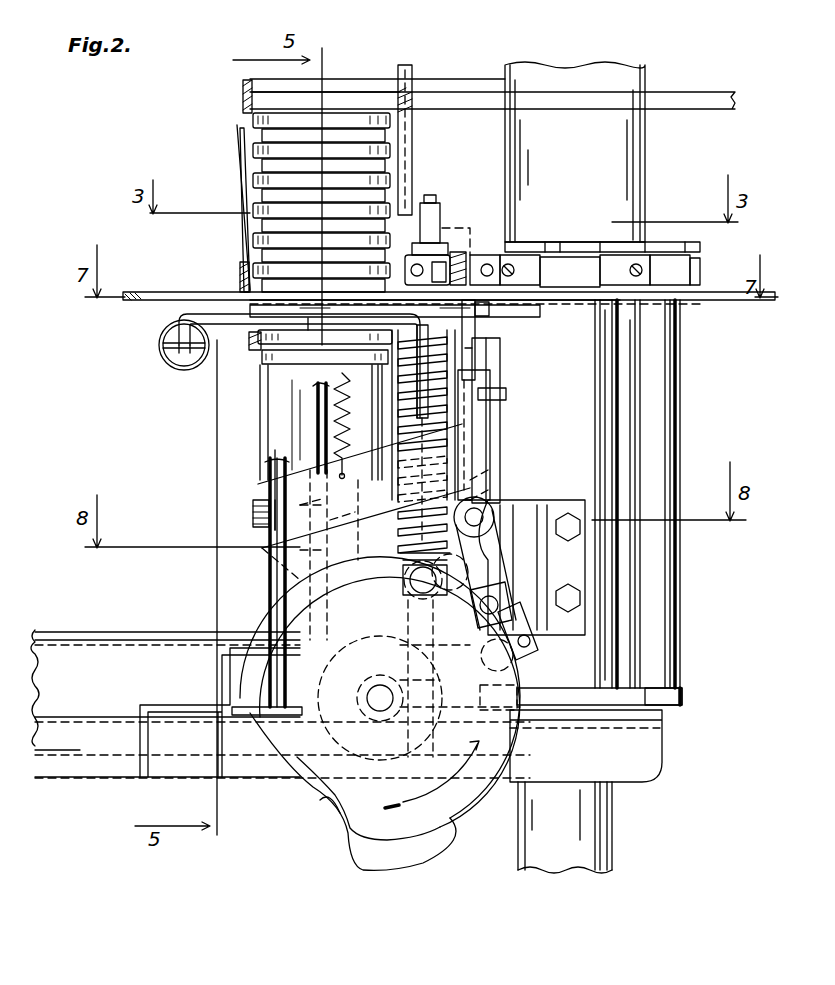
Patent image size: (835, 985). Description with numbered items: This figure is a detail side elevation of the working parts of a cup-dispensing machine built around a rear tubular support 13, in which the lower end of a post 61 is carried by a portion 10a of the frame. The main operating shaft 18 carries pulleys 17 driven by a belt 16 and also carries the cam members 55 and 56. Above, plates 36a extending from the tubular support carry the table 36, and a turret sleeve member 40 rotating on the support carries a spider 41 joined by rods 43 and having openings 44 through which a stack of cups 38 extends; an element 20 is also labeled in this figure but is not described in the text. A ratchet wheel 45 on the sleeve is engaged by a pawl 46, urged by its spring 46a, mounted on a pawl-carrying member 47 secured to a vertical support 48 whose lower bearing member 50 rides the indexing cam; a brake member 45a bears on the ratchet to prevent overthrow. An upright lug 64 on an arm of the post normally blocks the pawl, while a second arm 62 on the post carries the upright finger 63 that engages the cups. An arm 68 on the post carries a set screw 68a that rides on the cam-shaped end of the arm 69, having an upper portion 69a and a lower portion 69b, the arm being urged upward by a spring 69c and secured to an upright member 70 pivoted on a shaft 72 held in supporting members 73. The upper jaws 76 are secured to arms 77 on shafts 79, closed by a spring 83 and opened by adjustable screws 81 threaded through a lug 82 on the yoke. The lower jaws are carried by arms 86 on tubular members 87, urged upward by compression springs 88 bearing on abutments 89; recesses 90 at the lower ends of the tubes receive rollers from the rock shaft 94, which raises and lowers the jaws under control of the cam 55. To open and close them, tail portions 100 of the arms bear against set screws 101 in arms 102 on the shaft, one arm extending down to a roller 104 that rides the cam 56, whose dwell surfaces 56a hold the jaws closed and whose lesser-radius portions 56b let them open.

The portion of the frame member 10a is at (200, 716).
The second tubular support 13 is at (596, 838).
The belt 16 is at (43, 636).
The pulley 17 is at (345, 673).
The shaft 18 is at (378, 688).
The laminated stack 20 is at (262, 185).
The table 36 is at (718, 300).
The plate 36a is at (608, 312).
The stack of cups 38 is at (360, 120).
The sleeve member 40 is at (630, 170).
The spider 41 is at (243, 90).
The rod 43 is at (411, 142).
The opening 44 is at (268, 98).
The ratchet wheel 45 is at (698, 250).
The brake member 45a is at (570, 272).
The pawl 46 is at (446, 242).
The spring 46a is at (482, 268).
The pawl-carrying member 47 is at (682, 271).
The vertical support 48 is at (662, 428).
The bearing member 50 is at (683, 697).
The cam member 55 is at (282, 792).
The cam member 56 is at (385, 812).
The dwell surface 56a is at (262, 633).
The portion of lesser radius 56b is at (320, 800).
The post 61 is at (270, 594).
The second arm 62 is at (252, 270).
The upright finger 63 is at (246, 228).
The upright lug 64 is at (470, 262).
The arm 68 is at (268, 538).
The set screw 68a is at (252, 524).
The second arm 69 is at (363, 503).
The upper portion 69a is at (270, 500).
The lower portion 69b is at (260, 568).
The spring 69c is at (333, 404).
The upright member 70 is at (495, 360).
The shaft 72 is at (480, 514).
The supporting member 73 is at (535, 512).
The upper jaw 76 is at (310, 320).
The arm 77 is at (205, 314).
The shaft 79 is at (385, 636).
The adjustable screw 81 is at (540, 313).
The lug 82 is at (476, 328).
The spring 83 is at (163, 346).
The arm 86 is at (270, 330).
The tubular member 87 is at (411, 441).
The compression spring 88 is at (398, 531).
The abutment 89 is at (402, 560).
The recess 90 is at (409, 581).
The shaft 94 is at (497, 602).
The tail portion 100 is at (321, 420).
The set screw 101 is at (505, 395).
The arm 102 is at (474, 434).
The roller 104 is at (522, 650).